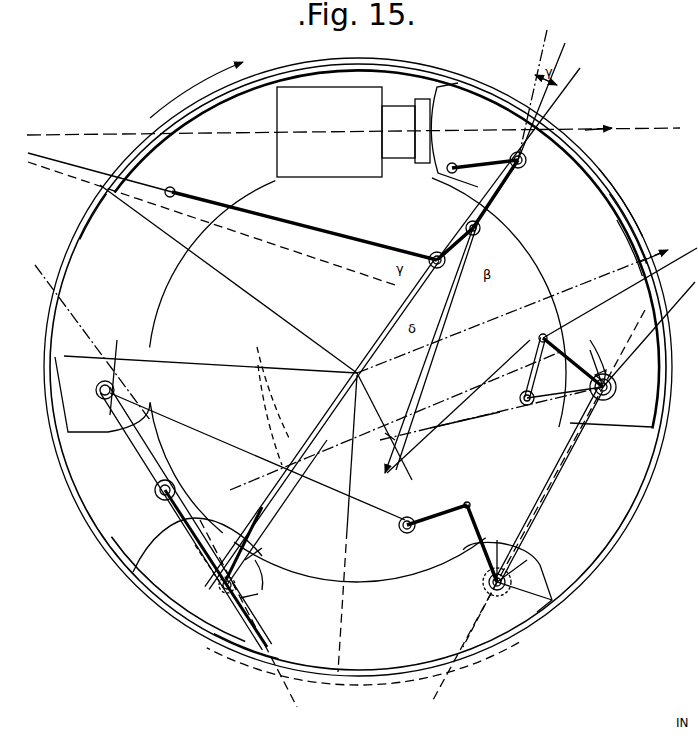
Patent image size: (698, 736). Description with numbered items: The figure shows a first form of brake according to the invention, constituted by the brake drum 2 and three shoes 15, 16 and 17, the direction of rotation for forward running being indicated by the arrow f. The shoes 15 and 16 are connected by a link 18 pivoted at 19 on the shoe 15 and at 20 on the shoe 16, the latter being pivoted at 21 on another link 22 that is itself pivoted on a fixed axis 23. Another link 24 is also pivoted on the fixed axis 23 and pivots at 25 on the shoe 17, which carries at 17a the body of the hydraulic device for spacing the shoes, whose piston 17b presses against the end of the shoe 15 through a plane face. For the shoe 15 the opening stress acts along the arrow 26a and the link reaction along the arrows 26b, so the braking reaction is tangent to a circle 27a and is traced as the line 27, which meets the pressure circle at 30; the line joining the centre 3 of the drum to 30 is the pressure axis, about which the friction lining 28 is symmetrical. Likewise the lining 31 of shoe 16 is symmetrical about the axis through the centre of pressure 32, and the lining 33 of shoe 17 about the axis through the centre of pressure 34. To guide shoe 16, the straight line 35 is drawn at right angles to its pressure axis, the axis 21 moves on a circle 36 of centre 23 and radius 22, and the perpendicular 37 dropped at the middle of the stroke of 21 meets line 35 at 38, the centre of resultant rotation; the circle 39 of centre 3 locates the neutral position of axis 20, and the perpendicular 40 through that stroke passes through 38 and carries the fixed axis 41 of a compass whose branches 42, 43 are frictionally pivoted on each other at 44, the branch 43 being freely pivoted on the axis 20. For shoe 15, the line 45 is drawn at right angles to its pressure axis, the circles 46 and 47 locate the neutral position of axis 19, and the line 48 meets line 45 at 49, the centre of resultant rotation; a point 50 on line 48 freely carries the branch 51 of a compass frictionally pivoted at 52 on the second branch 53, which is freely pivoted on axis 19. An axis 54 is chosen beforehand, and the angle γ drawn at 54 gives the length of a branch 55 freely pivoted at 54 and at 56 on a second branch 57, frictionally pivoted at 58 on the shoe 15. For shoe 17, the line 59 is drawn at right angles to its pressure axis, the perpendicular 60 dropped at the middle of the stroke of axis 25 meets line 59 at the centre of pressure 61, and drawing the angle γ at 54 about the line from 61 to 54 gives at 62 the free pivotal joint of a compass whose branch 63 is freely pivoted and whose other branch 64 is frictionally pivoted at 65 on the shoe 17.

The brake drum 2 is at (622, 540).
The centre of the drum 3 is at (356, 370).
The shoe 15 is at (582, 198).
The shoe 16 is at (405, 690).
The shoe 17 is at (90, 273).
The body of the device for spacing the shoes 17a is at (335, 165).
The piston 17b is at (420, 175).
The link 18 is at (570, 470).
The pivot axis of link on shoe 15 19 is at (612, 398).
The pivot axis of link on shoe 16 20 is at (548, 600).
The pivot axis of shoe 16 on link 22 21 is at (218, 592).
The link 22 is at (183, 503).
The fixed axis 23 is at (155, 497).
The link 24 is at (120, 445).
The pivot axis of link 24 on shoe 17 25 is at (96, 392).
The arrow of opening stress 26a is at (600, 127).
The arrows of link reaction 26b is at (665, 257).
The line of braking reaction 27 is at (398, 470).
The circle of radius ρ 27a is at (428, 417).
The friction lining 28 is at (605, 213).
The centre of pressure 30 is at (630, 236).
The lining 31 is at (280, 658).
The centre of pressure 32 is at (338, 690).
The lining 33 is at (97, 233).
The centre of pressure 34 is at (103, 188).
The straight line 35 is at (195, 362).
The circle 36 is at (258, 567).
The perpendicular 37 is at (140, 475).
The centre of resultant rotation of shoe 16 38 is at (90, 345).
The circle 39 is at (487, 590).
The perpendicular 40 is at (372, 583).
The fixed axis 41 is at (407, 535).
The compass branch 42 is at (440, 510).
The compass branch 43 is at (472, 540).
The frictional pivot 44 is at (470, 500).
The straight line 45 is at (376, 400).
The circle 46 is at (630, 370).
The circle 47 is at (590, 340).
The line 48 is at (462, 422).
The centre of resultant rotation of shoe 15 49 is at (390, 437).
The pivot point 50 is at (522, 396).
The compass branch 51 is at (537, 372).
The frictional pivot 52 is at (538, 335).
The compass branch 53 is at (560, 345).
The axis 54 is at (466, 228).
The compass branch 55 is at (505, 200).
The free pivot 56 is at (526, 164).
The compass branch 57 is at (478, 164).
The frictional pivot 58 is at (453, 163).
The line 59 is at (320, 422).
The perpendicular 60 is at (115, 346).
The centre of pressure 61 is at (210, 574).
The free pivotal joint 62 is at (430, 256).
The compass branch 63 is at (482, 245).
The compass branch 64 is at (303, 224).
The frictional pivot 65 is at (172, 188).
The arrow of direction of rotation f is at (180, 95).